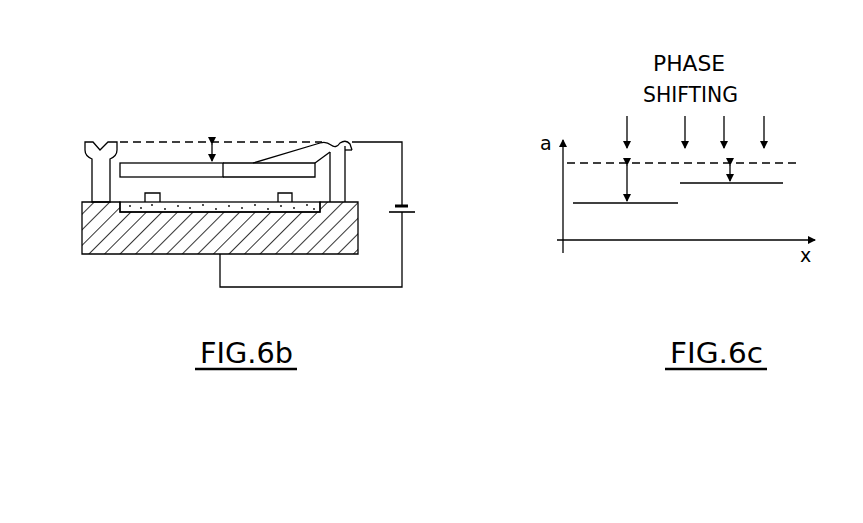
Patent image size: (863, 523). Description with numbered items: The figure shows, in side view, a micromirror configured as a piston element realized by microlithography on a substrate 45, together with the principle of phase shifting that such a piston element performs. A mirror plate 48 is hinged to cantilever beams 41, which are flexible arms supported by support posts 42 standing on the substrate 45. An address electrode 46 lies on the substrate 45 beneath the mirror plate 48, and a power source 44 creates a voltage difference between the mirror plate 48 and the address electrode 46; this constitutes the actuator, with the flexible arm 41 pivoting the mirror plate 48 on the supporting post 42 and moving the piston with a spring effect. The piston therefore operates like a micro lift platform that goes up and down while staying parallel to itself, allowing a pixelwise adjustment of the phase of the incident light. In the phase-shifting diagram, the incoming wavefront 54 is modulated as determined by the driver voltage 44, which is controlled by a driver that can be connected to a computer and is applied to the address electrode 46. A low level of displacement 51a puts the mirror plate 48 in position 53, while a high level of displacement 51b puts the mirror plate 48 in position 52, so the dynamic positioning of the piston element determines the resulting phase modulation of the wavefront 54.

In FIG. 6B, the cantilever beam 41 is at (282, 158).
In FIG. 6B, the support post 42 is at (345, 167).
In FIG. 6B, the power source 44 is at (403, 200).
In FIG. 6B, the substrate 45 is at (85, 232).
In FIG. 6B, the address electrode 46 is at (135, 213).
In FIG. 6B, the mirror plate 48 is at (173, 172).
In FIG. 6C, the low level of displacement 51a is at (624, 182).
In FIG. 6C, the high level of displacement 51b is at (733, 170).
In FIG. 6C, the position 52 is at (757, 186).
In FIG. 6C, the position 53 is at (653, 206).
In FIG. 6C, the incoming wavefront 54 is at (777, 119).